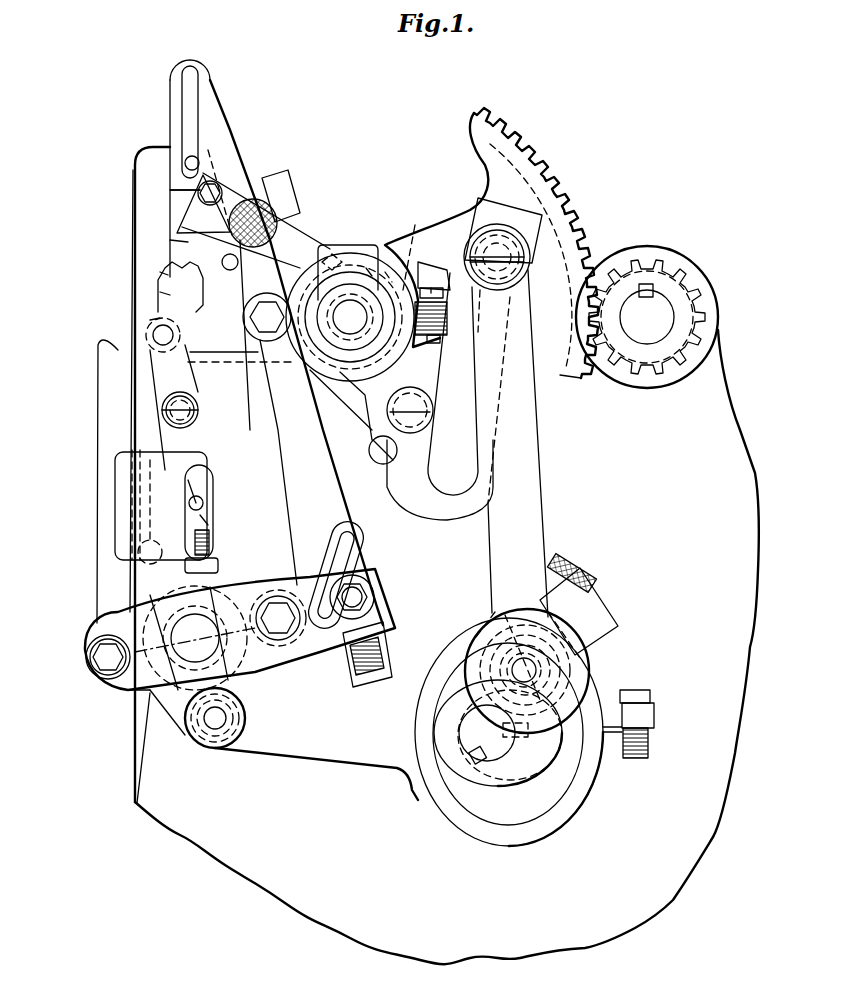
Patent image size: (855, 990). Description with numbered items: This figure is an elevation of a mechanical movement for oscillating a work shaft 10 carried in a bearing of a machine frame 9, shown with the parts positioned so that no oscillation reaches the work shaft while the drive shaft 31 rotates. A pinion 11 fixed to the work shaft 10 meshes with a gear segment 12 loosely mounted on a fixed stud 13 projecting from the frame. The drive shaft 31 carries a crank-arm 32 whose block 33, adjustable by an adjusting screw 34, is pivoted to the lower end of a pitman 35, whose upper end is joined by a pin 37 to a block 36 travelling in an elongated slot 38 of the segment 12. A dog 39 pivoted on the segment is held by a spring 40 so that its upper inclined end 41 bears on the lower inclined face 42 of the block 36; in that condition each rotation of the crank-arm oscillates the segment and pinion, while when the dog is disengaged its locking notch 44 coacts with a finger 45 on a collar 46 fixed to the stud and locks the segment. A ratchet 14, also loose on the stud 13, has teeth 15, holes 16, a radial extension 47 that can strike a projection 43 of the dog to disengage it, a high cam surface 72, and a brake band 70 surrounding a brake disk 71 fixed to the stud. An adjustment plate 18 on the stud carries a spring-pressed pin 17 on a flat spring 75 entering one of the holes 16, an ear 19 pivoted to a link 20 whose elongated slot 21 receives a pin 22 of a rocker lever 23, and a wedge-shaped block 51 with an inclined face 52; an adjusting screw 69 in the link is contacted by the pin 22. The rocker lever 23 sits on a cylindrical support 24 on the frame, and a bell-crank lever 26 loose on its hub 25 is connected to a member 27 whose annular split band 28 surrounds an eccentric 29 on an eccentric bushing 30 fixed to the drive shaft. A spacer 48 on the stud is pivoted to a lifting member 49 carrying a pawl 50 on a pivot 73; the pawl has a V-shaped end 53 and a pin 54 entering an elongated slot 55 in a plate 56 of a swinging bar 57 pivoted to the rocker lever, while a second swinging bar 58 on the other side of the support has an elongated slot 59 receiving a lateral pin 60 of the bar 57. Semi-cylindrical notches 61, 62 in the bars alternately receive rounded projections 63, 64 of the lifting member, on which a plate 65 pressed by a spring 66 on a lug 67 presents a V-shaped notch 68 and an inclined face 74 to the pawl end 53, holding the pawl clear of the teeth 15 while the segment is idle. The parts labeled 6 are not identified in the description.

The hexagonal nut 6 is at (86, 660).
The machine frame 9 is at (208, 842).
The work shaft 10 is at (656, 300).
The pinion 11 is at (648, 258).
The gear segment 12 is at (560, 188).
The fixed stud 13 is at (350, 253).
The ratchet 14 is at (300, 195).
The teeth 15 is at (160, 266).
The holes 16 is at (266, 203).
The spring-pressed pin 17 is at (238, 168).
The adjustment plate 18 is at (323, 244).
The ear 19 is at (330, 256).
The link 20 is at (328, 480).
The elongated slot 21 is at (347, 548).
The pin 22 is at (370, 595).
The rocker lever 23 is at (300, 636).
The cylindrical support 24 is at (145, 622).
The hub 25 is at (140, 697).
The bell-crank lever 26 is at (177, 715).
The member 27 is at (331, 760).
The annular split band 28 is at (570, 823).
The eccentric 29 is at (508, 825).
The eccentric bushing 30 is at (552, 755).
The drive shaft 31 is at (475, 733).
The crank-arm 32 is at (588, 660).
The block 33 is at (600, 605).
The adjusting screw 34 is at (598, 583).
The pitman 35 is at (544, 497).
The block 36 is at (500, 212).
The pin 37 is at (490, 235).
The elongated slot 38 is at (467, 440).
The dog 39 is at (436, 388).
The spring 40 is at (368, 446).
The upper inclined end 41 is at (438, 265).
The lower inclined face 42 is at (483, 300).
The projection 43 is at (362, 400).
The locking notch 44 is at (432, 345).
The finger 45 is at (417, 246).
The collar 46 is at (352, 383).
The radial extension 47 is at (408, 392).
The spacer 48 is at (230, 365).
The lifting member 49 is at (148, 437).
The pawl 50 is at (175, 372).
The wedge-shaped block 51 is at (185, 213).
The inclined face 52 is at (168, 233).
The V-shaped end 53 is at (203, 503).
The pin 54 is at (205, 498).
The elongated slot 55 is at (205, 468).
The plate 56 is at (115, 523).
The swinging bar 57 is at (112, 362).
The swinging bar 58 is at (228, 138).
The elongated slot 59 is at (182, 90).
The lateral pin 60 is at (191, 156).
The semi-cylindrical notch 61 is at (160, 272).
The semi-cylindrical notch 62 is at (168, 240).
The rounded projection 63 is at (160, 292).
The rounded projection 64 is at (150, 320).
The plate 65 is at (138, 550).
The spring 66 is at (208, 543).
The lug 67 is at (218, 566).
The V-shaped notch 68 is at (208, 520).
The adjusting screw 69 is at (380, 645).
The brake band 70 is at (388, 272).
The brake disk 71 is at (370, 268).
The high cam surface 72 is at (175, 337).
The pivot 73 is at (162, 406).
The inclined face 74 is at (148, 510).
The flat spring 75 is at (290, 232).